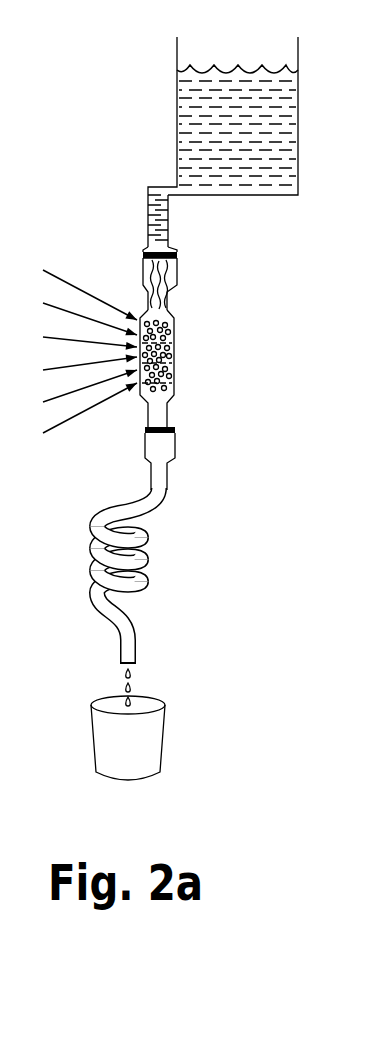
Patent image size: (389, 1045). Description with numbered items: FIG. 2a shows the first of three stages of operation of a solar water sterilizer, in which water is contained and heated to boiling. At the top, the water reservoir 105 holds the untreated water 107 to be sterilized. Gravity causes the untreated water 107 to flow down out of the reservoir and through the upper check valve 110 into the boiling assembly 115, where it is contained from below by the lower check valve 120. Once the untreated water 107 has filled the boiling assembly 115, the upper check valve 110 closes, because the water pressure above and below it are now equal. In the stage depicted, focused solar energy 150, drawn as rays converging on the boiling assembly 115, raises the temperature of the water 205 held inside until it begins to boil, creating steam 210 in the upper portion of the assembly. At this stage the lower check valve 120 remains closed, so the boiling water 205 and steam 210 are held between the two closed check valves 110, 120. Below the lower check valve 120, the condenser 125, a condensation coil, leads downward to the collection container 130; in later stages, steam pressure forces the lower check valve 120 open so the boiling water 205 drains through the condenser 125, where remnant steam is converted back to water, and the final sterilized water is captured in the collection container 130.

The water reservoir 105 is at (299, 127).
The untreated water 107 is at (277, 178).
The upper check valve 110 is at (177, 262).
The steam 210 is at (178, 302).
The boiling assembly 115 is at (176, 378).
The water in the boiling assembly 205 is at (187, 355).
The lower check valve 120 is at (177, 435).
The condenser 125 is at (148, 568).
The collection container 130 is at (165, 735).
The focused solar energy 150 is at (94, 281).